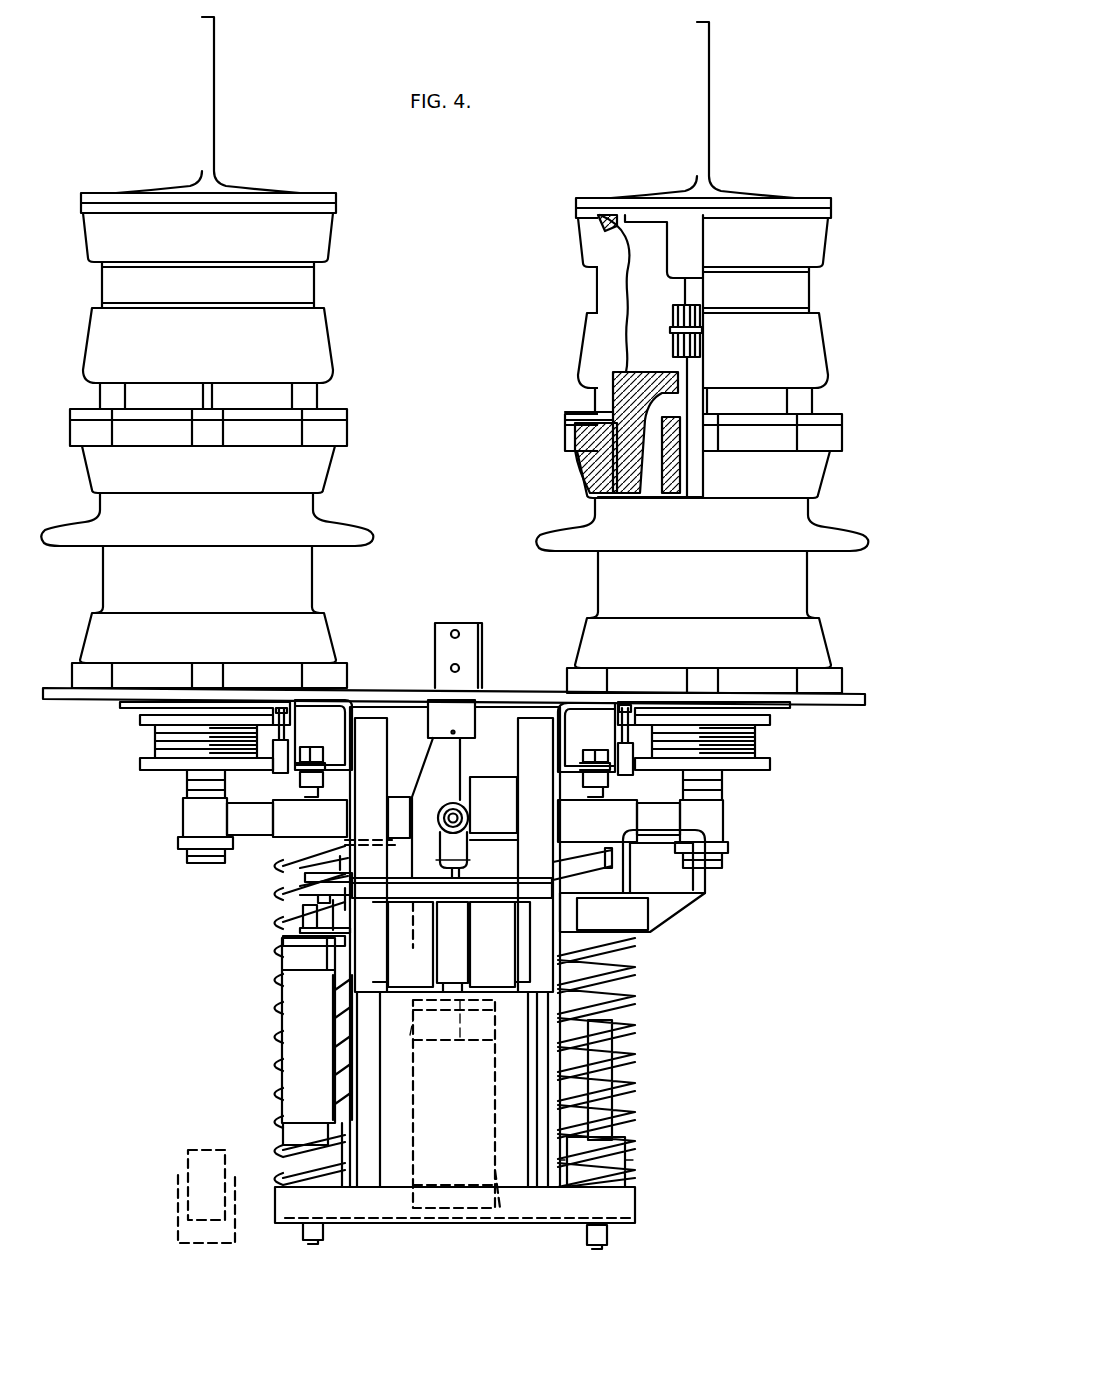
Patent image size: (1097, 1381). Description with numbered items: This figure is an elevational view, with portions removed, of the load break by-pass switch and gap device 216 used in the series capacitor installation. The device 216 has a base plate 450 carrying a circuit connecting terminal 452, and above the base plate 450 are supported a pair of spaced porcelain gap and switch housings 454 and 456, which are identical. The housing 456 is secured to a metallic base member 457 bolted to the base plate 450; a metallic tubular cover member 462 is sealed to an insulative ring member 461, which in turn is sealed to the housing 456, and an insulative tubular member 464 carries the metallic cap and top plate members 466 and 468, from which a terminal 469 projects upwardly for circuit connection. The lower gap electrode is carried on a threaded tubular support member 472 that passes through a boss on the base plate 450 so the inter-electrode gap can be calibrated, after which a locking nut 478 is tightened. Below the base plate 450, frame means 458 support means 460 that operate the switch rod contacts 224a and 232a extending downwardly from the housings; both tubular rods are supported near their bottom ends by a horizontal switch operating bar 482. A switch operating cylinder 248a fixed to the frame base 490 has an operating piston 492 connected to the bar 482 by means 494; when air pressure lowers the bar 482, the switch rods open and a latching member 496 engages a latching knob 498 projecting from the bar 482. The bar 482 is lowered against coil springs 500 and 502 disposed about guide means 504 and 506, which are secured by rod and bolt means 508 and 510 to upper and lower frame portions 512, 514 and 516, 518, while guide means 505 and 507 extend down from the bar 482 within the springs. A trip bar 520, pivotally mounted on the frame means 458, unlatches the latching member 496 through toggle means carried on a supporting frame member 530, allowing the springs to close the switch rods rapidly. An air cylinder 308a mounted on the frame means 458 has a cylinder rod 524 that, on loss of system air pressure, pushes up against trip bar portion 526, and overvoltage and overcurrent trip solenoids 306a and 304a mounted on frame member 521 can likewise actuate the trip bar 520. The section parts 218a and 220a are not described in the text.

The load break by-pass switch and gap device 216 is at (462, 524).
The insulator end fitting 218a is at (601, 399).
The insulator end cap 220a is at (662, 457).
The switch rod contact 224a is at (187, 788).
The tubular switch contact or rod 232a is at (725, 790).
The switch operating cylinder 248a is at (495, 1175).
The overcurrent trip solenoid 304a is at (414, 1002).
The overvoltage trip solenoid 306a is at (495, 1006).
The air cylinder 308a is at (283, 1018).
The base plate 450 is at (512, 692).
The circuit connecting terminal 452 is at (483, 630).
The porcelain gap and switch housing 454 is at (362, 530).
The porcelain gap and switch housing 456 is at (695, 391).
The metallic base member 457 is at (332, 622).
The frame means 458 is at (362, 818).
The supporting means 460 is at (629, 1008).
The insulative ring member 461 is at (834, 425).
The metallic tubular cover member 462 is at (822, 322).
The insulative tubular member 464 is at (808, 290).
The metallic cap member 466 is at (826, 246).
The top plate member 468 is at (806, 199).
The terminal 469 is at (214, 90).
The threaded tubular support member 472 is at (155, 738).
The locking nut 478 is at (140, 720).
The switch operating bar 482 is at (252, 825).
The frame base 490 is at (463, 1222).
The operating piston 492 is at (410, 1038).
The interconnecting means 494 is at (462, 870).
The latching member 496 is at (421, 775).
The latching knob 498 is at (460, 800).
The coil spring 500 is at (275, 978).
The coil spring 502 is at (632, 972).
The guide means 504 is at (283, 1162).
The guide means 505 is at (285, 875).
The guide means 506 is at (632, 1160).
The guide means 507 is at (632, 952).
The rod and bolt means 508 is at (300, 790).
The rod and bolt means 510 is at (606, 793).
The upper frame portion 512 is at (345, 732).
The lower frame portion 514 is at (288, 1222).
The upper frame portion 516 is at (560, 738).
The lower frame portion 518 is at (636, 1213).
The trip bar 520 is at (300, 878).
The frame member 521 is at (497, 885).
The cylinder rod 524 is at (290, 917).
The trip bar portion 526 is at (290, 897).
The supporting frame member 530 is at (290, 937).